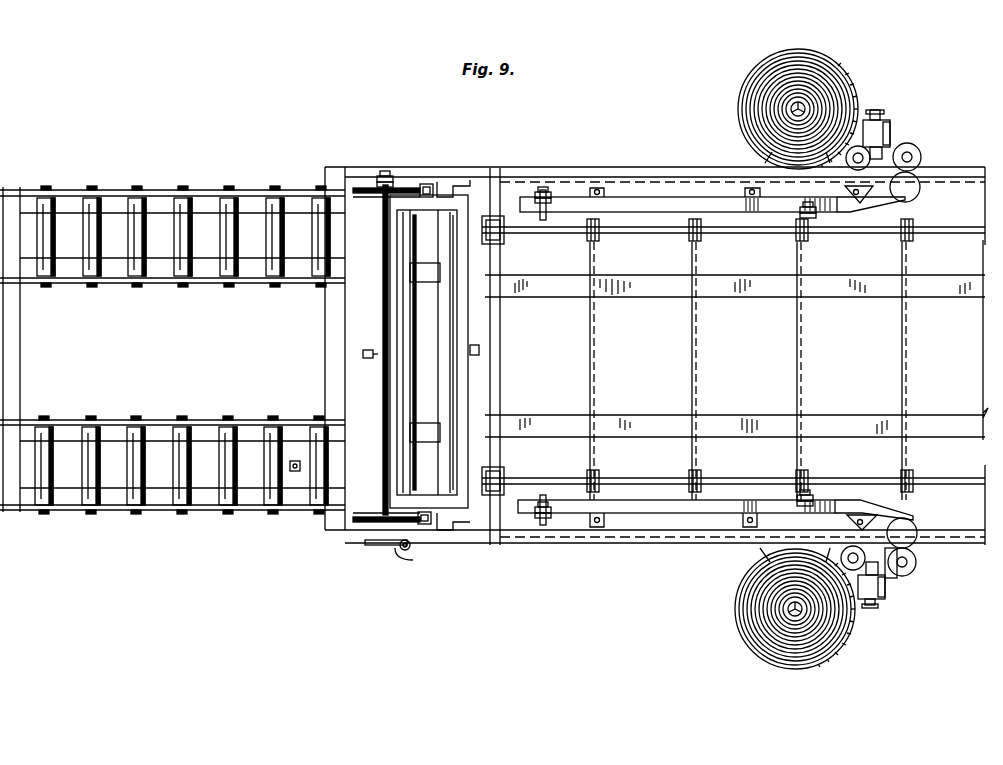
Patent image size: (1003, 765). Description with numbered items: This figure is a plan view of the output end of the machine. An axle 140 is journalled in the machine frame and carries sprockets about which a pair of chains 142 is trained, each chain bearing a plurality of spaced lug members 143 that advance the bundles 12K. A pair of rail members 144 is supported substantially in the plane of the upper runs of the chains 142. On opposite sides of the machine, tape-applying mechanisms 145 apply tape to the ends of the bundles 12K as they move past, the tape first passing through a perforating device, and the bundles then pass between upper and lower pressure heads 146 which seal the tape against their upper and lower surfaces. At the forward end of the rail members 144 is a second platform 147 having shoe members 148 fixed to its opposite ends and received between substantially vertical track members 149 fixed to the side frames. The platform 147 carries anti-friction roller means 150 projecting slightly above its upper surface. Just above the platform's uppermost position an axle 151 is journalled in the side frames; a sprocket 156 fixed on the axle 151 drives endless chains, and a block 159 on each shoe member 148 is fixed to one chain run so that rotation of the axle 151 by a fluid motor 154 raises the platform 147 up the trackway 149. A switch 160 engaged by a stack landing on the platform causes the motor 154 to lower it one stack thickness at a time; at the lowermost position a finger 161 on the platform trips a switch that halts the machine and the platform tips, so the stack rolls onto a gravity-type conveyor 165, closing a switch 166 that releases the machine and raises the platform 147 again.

The bundles 12K is at (756, 342).
The axle 140 is at (493, 189).
The chains 142 is at (644, 234).
The lug members 143 is at (800, 240).
The rail members 144 is at (646, 288).
The tape-applying mechanisms 145 is at (866, 76).
The pressure heads 146 is at (628, 197).
The second platform 147 is at (463, 311).
The shoe members 148 is at (430, 185).
The track members 149 is at (448, 183).
The anti-friction roller means 150 is at (410, 372).
The axle 151 is at (383, 322).
The fluid motor 154 is at (415, 548).
The sprocket 156 is at (366, 186).
The block 159 is at (420, 186).
The switch 160 is at (366, 358).
The finger 161 is at (480, 351).
The gravity-type conveyor 165 is at (218, 168).
The switch 166 is at (296, 471).